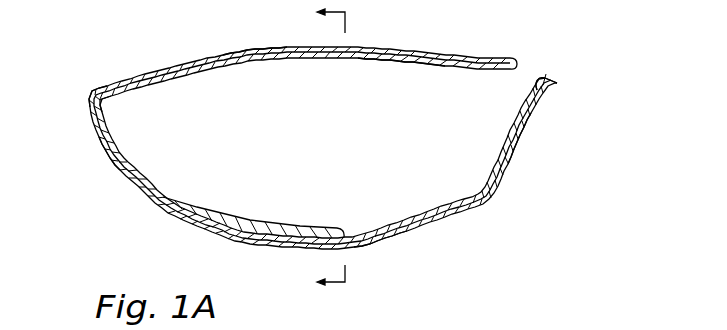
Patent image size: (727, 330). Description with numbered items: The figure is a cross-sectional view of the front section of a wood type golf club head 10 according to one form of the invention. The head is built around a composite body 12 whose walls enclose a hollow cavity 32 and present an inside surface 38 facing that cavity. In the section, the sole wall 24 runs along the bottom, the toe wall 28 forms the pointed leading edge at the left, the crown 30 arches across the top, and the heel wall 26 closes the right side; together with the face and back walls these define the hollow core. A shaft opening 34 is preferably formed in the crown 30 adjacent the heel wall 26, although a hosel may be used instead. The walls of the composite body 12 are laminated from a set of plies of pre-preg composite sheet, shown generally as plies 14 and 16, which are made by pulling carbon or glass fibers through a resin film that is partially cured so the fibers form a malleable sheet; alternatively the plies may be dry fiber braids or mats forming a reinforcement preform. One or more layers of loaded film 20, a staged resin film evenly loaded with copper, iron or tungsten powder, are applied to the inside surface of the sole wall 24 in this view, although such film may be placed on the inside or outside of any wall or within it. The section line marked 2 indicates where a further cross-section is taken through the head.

The golf club head 10 is at (629, 135).
The composite body 12 is at (496, 203).
The ply of pre-preg composite sheet 14 is at (89, 97).
The ply of pre-preg composite sheet 16 is at (97, 98).
The loaded film 20 is at (245, 221).
The sole wall 24 is at (383, 241).
The heel wall 26 is at (527, 157).
The toe wall 28 is at (118, 170).
The crown 30 is at (248, 47).
The hollow cavity 32 is at (356, 146).
The shaft opening 34 is at (536, 76).
The inside surface 38 is at (407, 62).
The section line 2- 2 is at (322, 147).